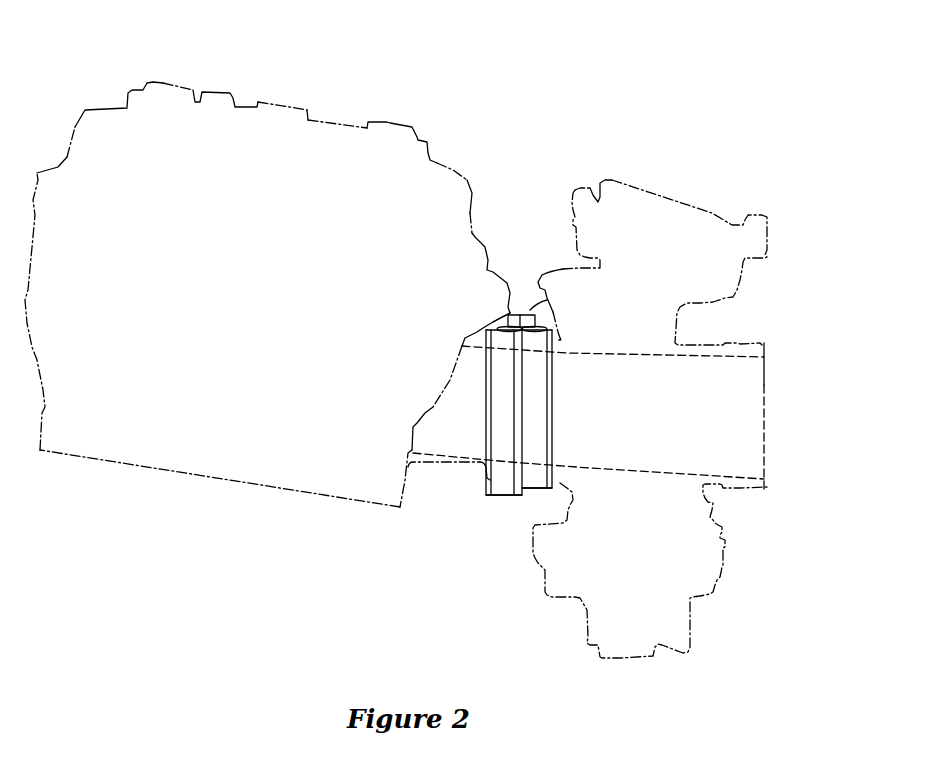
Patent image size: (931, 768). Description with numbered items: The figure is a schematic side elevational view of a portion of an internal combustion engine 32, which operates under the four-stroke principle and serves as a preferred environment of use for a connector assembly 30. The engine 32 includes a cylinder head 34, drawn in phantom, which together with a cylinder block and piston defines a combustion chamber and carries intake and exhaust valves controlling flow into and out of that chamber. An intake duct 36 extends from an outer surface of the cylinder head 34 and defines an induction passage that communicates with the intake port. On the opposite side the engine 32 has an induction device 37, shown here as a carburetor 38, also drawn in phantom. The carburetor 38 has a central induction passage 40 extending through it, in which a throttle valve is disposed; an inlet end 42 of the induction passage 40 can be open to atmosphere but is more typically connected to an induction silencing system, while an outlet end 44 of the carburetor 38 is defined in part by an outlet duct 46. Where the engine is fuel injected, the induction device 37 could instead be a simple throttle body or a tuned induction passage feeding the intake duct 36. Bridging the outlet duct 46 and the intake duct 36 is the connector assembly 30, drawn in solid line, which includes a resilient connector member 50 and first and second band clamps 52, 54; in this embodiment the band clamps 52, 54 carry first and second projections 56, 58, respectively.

The connector assembly 30 is at (524, 290).
The internal combustion engine 32 is at (468, 65).
The cylinder head 34 is at (238, 99).
The intake duct 36 is at (425, 468).
The induction device 37 is at (728, 148).
The carburetor 38 is at (712, 213).
The induction passage 40 is at (735, 387).
The inlet end 42 is at (757, 447).
The outlet end 44 is at (594, 400).
The outlet duct 46 is at (553, 510).
The resilient connector member 50 is at (486, 440).
The first band clamp 52 is at (497, 497).
The second band clamp 54 is at (537, 489).
The first projection 56 is at (510, 310).
The second projection 58 is at (555, 300).